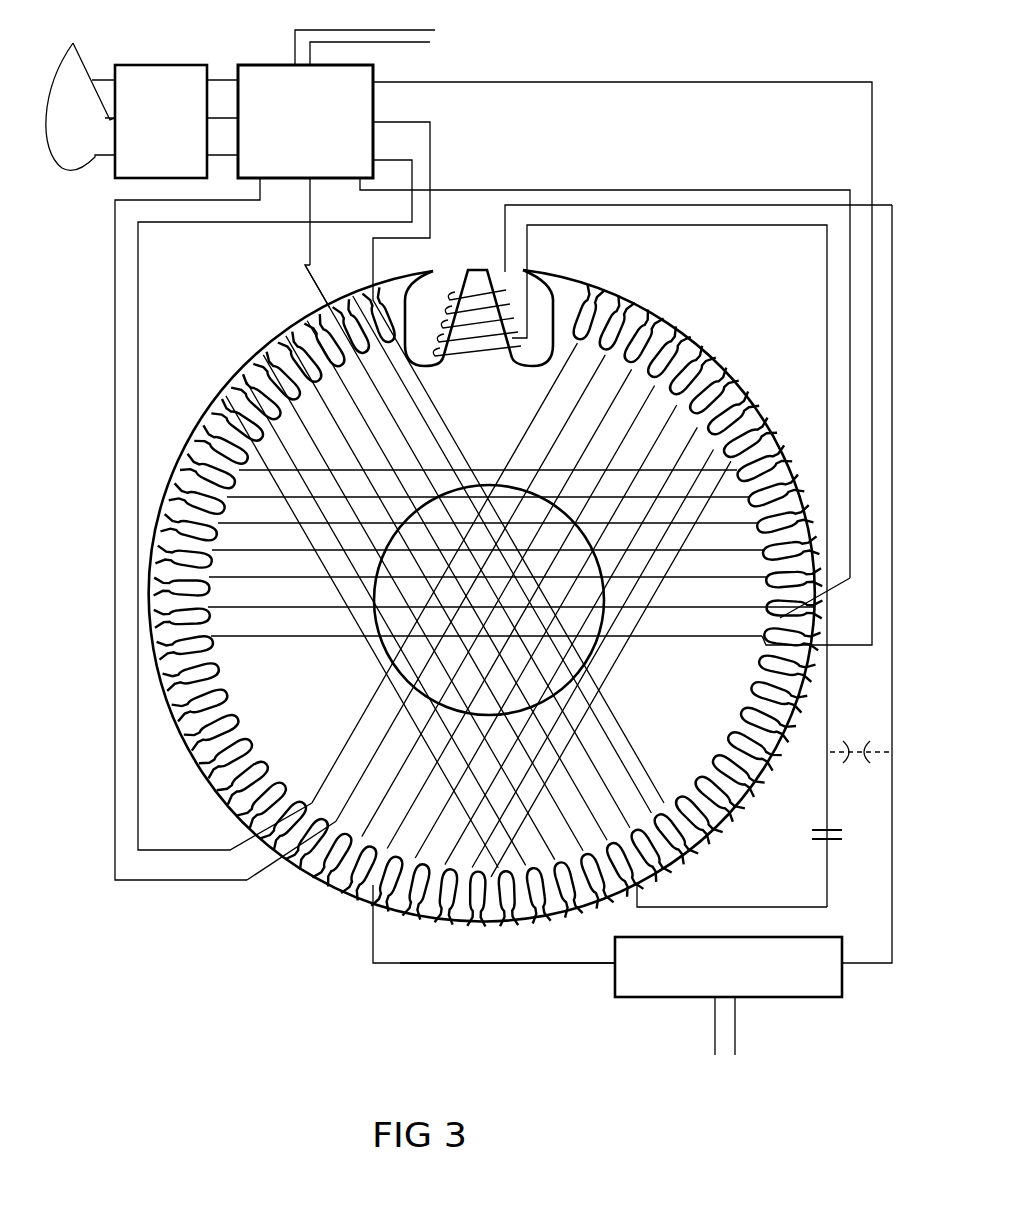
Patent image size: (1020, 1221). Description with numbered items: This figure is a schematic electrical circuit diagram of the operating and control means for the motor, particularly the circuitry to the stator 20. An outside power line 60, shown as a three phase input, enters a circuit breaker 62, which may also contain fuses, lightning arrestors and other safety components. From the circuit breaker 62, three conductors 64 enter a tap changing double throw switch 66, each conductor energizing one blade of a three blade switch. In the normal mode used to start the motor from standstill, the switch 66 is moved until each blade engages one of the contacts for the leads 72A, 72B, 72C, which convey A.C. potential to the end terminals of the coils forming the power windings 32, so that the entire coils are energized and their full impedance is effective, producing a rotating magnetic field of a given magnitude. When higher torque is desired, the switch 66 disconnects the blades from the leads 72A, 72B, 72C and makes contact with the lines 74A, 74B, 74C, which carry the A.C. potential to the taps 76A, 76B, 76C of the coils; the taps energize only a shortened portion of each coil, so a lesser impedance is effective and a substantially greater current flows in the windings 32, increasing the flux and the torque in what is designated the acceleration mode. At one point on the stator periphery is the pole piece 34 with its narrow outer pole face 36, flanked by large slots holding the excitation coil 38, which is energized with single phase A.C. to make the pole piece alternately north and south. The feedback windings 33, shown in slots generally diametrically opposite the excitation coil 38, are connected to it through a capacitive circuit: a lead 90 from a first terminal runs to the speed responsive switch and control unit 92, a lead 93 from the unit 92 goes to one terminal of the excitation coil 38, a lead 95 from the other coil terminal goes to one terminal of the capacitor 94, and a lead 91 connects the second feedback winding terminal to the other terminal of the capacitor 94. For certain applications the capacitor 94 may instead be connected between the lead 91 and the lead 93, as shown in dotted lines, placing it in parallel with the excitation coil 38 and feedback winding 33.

The stator 20 is at (668, 700).
The power windings 32 is at (658, 660).
The feedback windings 33 is at (507, 892).
The pole piece 34 is at (468, 356).
The outer pole face 36 is at (505, 245).
The excitation coil 38 is at (470, 290).
The outside power line 60 is at (104, 76).
The circuit breaker 62 is at (125, 65).
The conductors 64 is at (228, 100).
The tap changing double throw switch 66 is at (276, 65).
The lead 72A is at (431, 143).
The lead 72B is at (431, 186).
The lead 72C is at (477, 83).
The line 74A is at (289, 221).
The line 74B is at (115, 262).
The line 74C is at (668, 190).
The tap 76A is at (308, 288).
The tap 76B is at (288, 871).
The tap 76C is at (782, 619).
The lead 90 is at (476, 964).
The lead 91 is at (768, 906).
The speed responsive switch and control unit 92 is at (766, 998).
The lead 93 is at (935, 396).
The capacitor 94 is at (850, 792).
The lead 95 is at (742, 228).